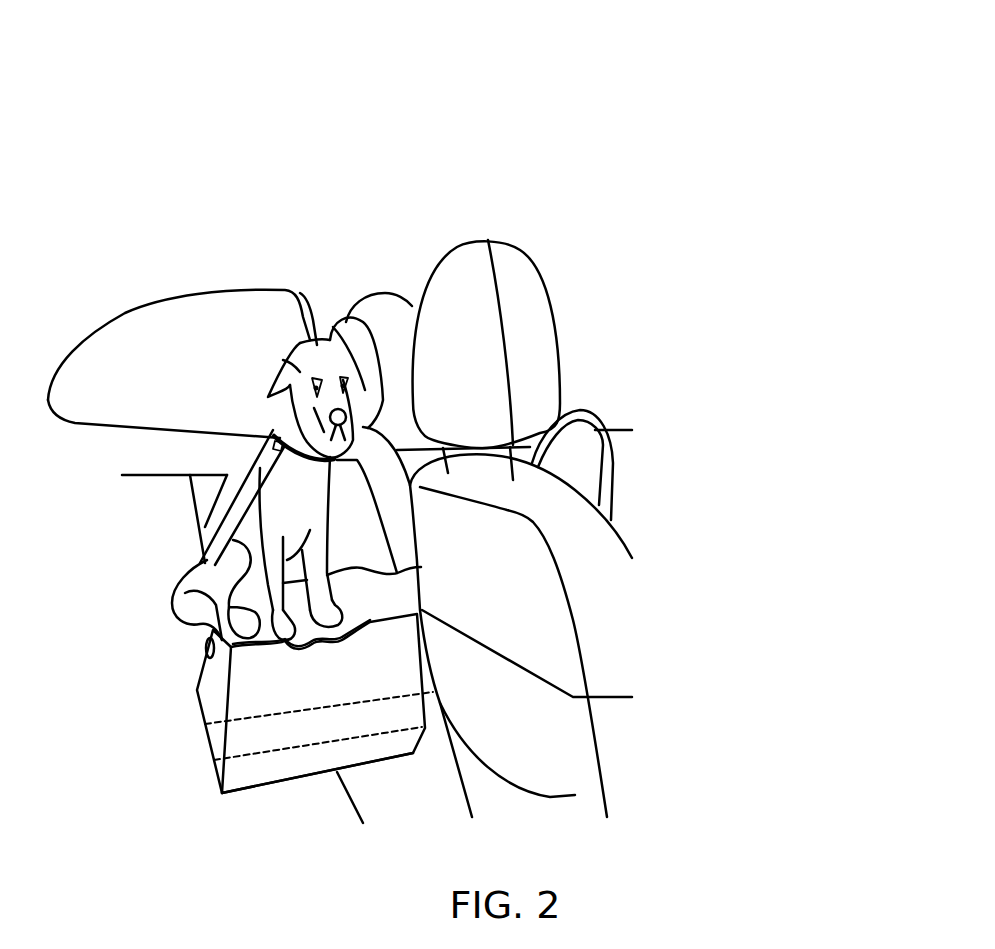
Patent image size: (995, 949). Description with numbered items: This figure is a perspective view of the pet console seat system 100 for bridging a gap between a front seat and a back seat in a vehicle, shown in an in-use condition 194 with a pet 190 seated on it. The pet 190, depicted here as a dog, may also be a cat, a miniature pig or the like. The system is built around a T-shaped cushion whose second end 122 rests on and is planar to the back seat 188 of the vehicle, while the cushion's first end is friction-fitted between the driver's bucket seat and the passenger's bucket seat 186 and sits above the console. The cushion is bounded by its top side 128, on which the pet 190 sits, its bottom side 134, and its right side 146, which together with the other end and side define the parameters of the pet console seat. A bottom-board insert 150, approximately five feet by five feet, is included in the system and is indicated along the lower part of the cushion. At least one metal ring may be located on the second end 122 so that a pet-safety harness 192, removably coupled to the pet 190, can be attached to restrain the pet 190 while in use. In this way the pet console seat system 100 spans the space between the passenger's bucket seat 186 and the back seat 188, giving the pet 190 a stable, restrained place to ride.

The pet console seat system 100 is at (536, 92).
The in-use condition 194 is at (549, 155).
The back seat 188 is at (91, 602).
The pet-safety harness 192 is at (227, 497).
The pet 190 is at (274, 490).
The second end 122 is at (245, 748).
The right side 146 is at (365, 663).
The top side 128 is at (350, 609).
The bottom-board insert 150 is at (409, 742).
The bottom side 134 is at (295, 790).
The passenger's bucket seat 186 is at (496, 612).